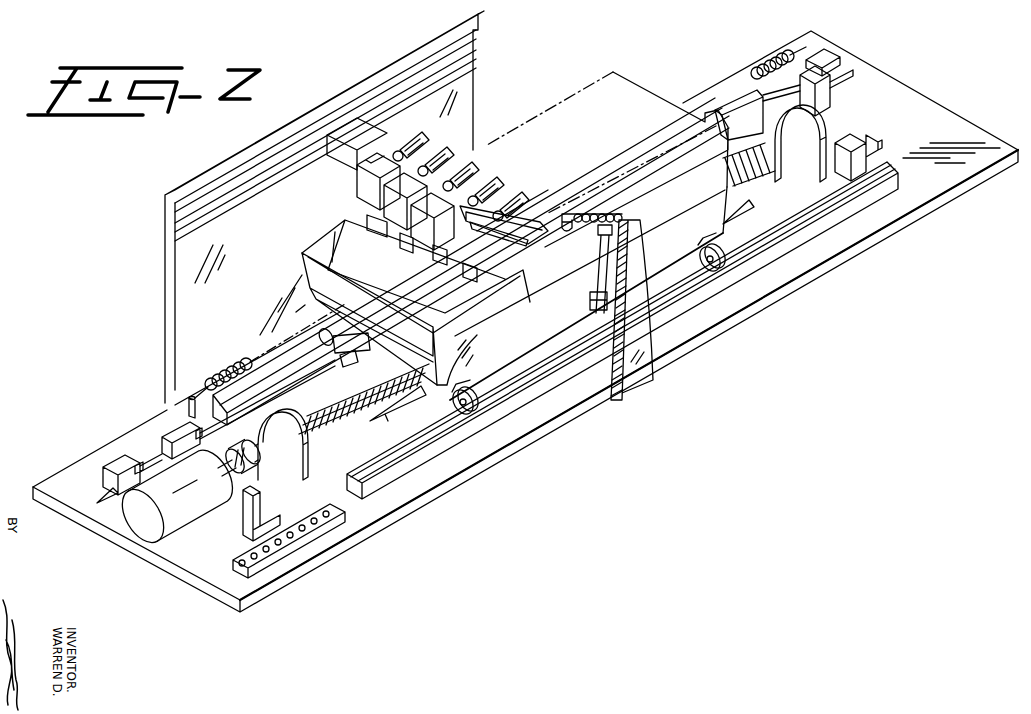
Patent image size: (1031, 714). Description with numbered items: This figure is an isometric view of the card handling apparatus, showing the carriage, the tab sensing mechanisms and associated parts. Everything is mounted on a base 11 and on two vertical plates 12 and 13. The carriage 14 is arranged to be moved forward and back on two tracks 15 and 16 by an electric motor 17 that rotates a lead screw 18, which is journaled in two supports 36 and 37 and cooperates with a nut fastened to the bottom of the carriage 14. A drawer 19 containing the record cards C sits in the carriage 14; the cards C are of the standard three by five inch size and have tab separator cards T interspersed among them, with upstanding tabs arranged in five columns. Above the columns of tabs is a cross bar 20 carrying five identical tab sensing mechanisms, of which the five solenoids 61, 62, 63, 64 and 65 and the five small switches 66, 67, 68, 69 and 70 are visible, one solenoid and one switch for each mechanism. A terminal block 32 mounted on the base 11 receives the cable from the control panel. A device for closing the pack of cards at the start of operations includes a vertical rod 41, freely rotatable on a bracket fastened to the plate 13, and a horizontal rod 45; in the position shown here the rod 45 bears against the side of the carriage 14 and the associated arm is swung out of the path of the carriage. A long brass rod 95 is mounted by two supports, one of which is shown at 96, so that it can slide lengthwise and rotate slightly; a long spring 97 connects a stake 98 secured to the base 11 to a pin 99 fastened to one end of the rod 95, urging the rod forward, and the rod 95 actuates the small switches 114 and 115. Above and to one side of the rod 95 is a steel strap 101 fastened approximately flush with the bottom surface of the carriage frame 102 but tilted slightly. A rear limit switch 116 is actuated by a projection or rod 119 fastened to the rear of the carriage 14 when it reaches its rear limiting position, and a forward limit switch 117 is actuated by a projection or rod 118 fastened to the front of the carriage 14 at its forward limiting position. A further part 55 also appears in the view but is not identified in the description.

The base 11 is at (940, 108).
The vertical plate 12 is at (476, 96).
The vertical plate 13 is at (653, 380).
The carriage 14 is at (710, 233).
The track 15 is at (180, 410).
The track 16 is at (347, 488).
The electric motor 17 is at (172, 533).
The lead screw 18 is at (333, 419).
The drawer 19 is at (710, 196).
The cross bar 20 is at (362, 147).
The terminal block 32 is at (240, 557).
The support 36 is at (304, 451).
The support 37 is at (824, 128).
The vertical rod 41 is at (604, 253).
The rod 45 is at (597, 295).
The bracket 55 is at (470, 334).
The solenoid 61 is at (360, 181).
The solenoid 62 is at (383, 194).
The solenoid 63 is at (400, 215).
The solenoid 64 is at (490, 238).
The solenoid 65 is at (505, 250).
The small switch 66 is at (428, 139).
The small switch 67 is at (448, 152).
The small switch 68 is at (477, 165).
The small switch 69 is at (501, 180).
The small switch 70 is at (526, 194).
The long brass rod 95 is at (140, 448).
The support 96 is at (831, 97).
The long spring 97 is at (233, 371).
The stake 98 is at (180, 388).
The pin 99 is at (828, 52).
The steel strap 101 is at (362, 351).
The carriage frame 102 is at (334, 334).
The small switch 114 is at (110, 461).
The small switch 115 is at (170, 430).
The rear limit switch 116 is at (872, 134).
The forward limit switch 117 is at (240, 520).
The projection or rod 118 is at (400, 416).
The projection or rod 119 is at (740, 221).
The tab separator cards T is at (345, 228).
The record cards C is at (470, 297).